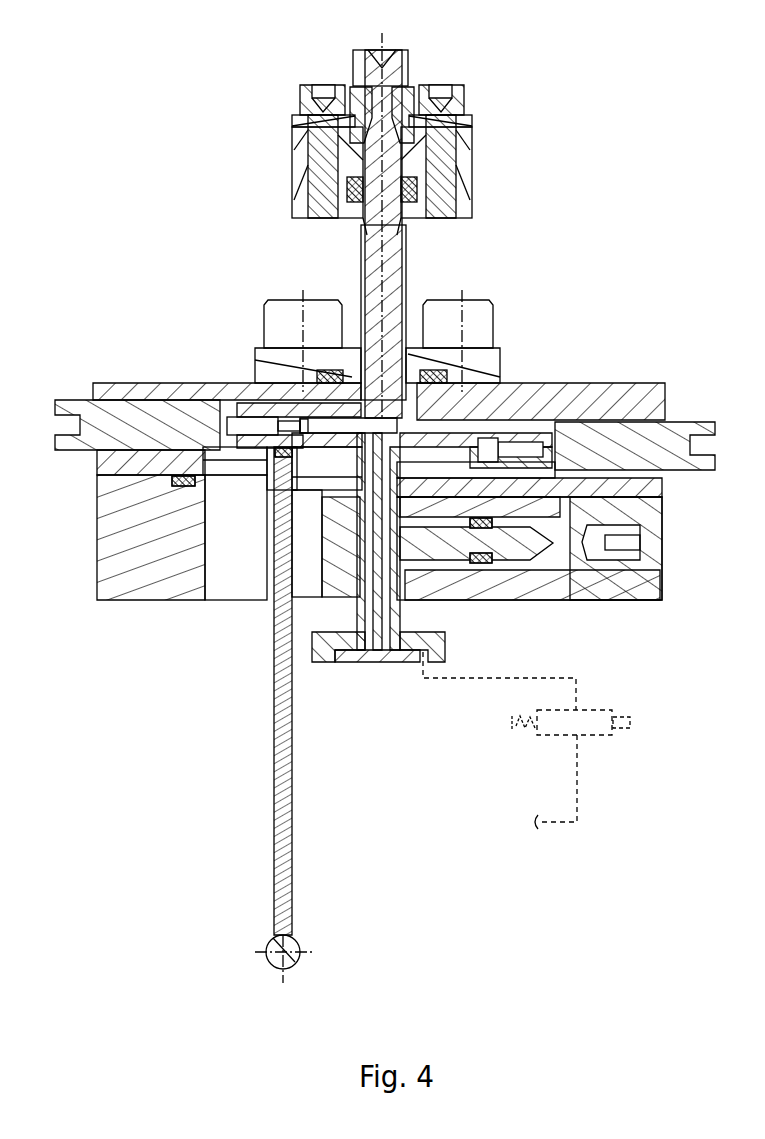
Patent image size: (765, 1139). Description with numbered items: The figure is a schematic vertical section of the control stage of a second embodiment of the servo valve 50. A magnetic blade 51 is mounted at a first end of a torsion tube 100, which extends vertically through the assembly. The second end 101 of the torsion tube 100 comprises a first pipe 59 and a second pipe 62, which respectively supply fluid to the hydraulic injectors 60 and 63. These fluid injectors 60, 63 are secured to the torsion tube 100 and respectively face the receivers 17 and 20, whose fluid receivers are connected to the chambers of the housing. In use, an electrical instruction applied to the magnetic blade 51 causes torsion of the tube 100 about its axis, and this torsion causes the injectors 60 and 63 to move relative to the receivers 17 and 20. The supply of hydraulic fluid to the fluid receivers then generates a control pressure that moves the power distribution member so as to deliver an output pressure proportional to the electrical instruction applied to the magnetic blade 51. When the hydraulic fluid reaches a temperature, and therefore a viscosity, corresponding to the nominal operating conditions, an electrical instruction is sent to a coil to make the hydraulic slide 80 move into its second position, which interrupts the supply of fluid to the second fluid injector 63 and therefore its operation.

The servo valve 50 is at (582, 117).
The magnetic blade 51 is at (465, 135).
The torsion tube 100 is at (395, 258).
The receiver 17 is at (138, 405).
The hydraulic injector 60 is at (232, 413).
The hydraulic injector 63 is at (532, 447).
The receiver 20 is at (628, 430).
The second end of the torsion tube 101 is at (399, 621).
The first pipe 59 is at (360, 652).
The second pipe 62 is at (408, 652).
The hydraulic slide 80 is at (597, 712).